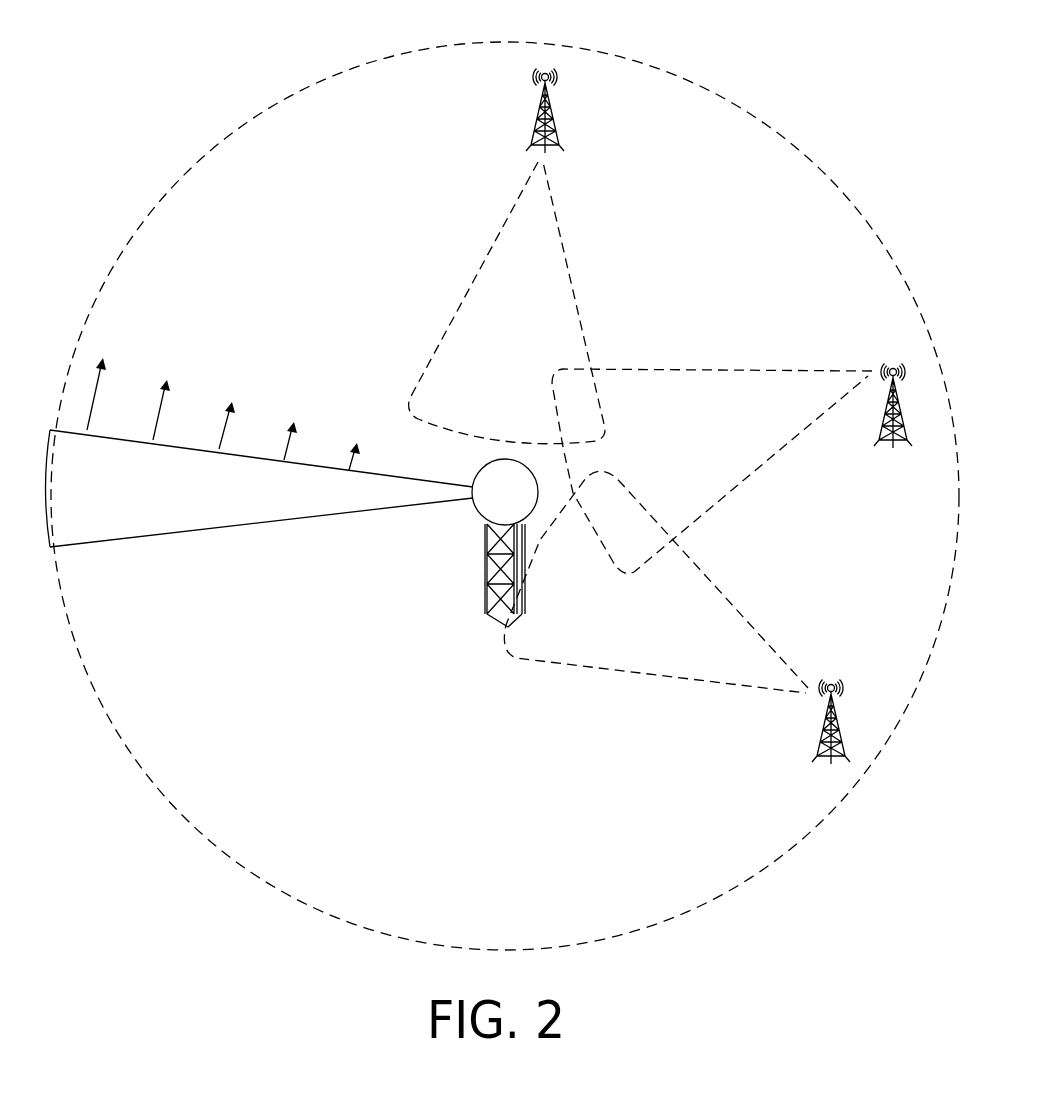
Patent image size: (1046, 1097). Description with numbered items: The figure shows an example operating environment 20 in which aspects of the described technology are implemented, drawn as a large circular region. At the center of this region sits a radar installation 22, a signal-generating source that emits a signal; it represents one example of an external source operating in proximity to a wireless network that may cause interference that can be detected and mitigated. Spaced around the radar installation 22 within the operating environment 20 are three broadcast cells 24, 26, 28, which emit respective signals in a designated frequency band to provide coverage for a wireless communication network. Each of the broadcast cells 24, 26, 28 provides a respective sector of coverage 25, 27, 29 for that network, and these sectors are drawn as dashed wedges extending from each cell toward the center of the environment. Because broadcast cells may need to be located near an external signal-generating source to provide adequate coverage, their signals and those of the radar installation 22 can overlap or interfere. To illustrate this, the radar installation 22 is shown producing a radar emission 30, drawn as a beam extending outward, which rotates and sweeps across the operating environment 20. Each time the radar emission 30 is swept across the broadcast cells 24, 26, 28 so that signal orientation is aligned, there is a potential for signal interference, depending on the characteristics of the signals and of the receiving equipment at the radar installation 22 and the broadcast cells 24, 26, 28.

The operating environment 20 is at (814, 50).
The radar installation 22 is at (490, 508).
The broadcast cell 24 is at (537, 117).
The sector of coverage 25 is at (498, 248).
The broadcast cell 26 is at (881, 442).
The sector of coverage 27 is at (756, 387).
The broadcast cell 28 is at (822, 727).
The sector of coverage 29 is at (680, 669).
The radar emission 30 is at (93, 532).